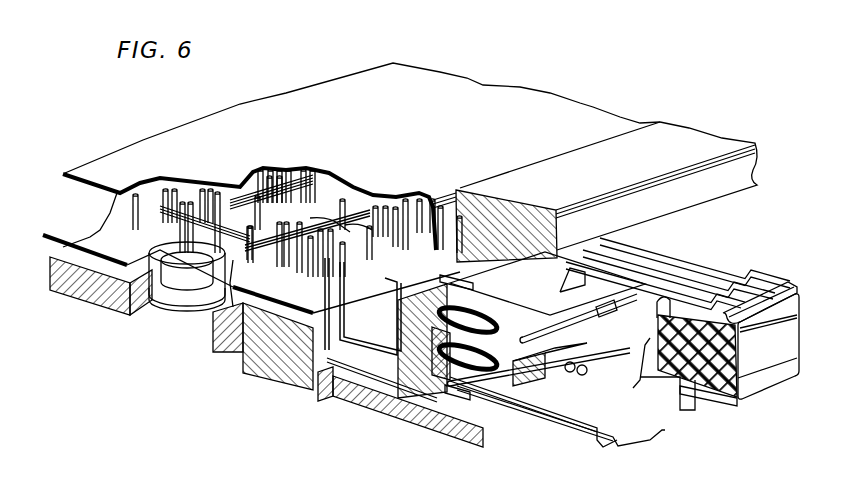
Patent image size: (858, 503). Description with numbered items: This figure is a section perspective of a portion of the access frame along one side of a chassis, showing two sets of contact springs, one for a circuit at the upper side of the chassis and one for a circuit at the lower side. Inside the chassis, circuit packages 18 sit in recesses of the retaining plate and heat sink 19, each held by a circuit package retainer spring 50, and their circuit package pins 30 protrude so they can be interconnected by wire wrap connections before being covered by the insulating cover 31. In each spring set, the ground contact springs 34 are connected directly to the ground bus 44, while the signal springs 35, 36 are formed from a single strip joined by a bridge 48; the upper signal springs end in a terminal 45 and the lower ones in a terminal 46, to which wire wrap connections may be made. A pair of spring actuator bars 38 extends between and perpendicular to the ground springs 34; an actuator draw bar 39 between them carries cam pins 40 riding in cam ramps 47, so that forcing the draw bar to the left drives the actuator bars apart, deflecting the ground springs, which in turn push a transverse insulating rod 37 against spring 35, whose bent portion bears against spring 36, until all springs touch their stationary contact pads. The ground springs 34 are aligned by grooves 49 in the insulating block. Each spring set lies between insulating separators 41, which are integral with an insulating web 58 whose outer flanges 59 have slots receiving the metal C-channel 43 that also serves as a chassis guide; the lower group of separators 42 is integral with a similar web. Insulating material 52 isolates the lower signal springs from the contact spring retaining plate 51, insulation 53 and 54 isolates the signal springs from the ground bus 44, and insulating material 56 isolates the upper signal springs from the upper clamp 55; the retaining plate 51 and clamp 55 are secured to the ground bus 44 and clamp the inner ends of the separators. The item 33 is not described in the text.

The circuit package 18 is at (180, 280).
The retaining plate and heat sink 19 is at (102, 300).
The circuit package pins 30 is at (270, 170).
The insulating cover 31 is at (350, 86).
The sheet 33 is at (110, 230).
The ground contact springs 34 is at (640, 336).
The signal spring 35 is at (620, 310).
The signal spring 36 is at (600, 305).
The transverse insulating rod 37 is at (610, 300).
The spring actuator bars 38 is at (583, 375).
The actuator draw bar 39 is at (535, 385).
The cam pins 40 is at (575, 362).
The separators 41 is at (755, 260).
The lower group of separators 42 is at (653, 395).
The C-channel 43 is at (790, 350).
The ground bus 44 is at (413, 392).
The terminal 45 is at (346, 282).
The terminal 46 is at (322, 292).
The cam ramps 47 is at (658, 312).
The bridge 48 is at (470, 286).
The grooves 49 is at (580, 292).
The circuit package retainer spring 50 is at (195, 296).
The contact spring retaining plate 51 is at (368, 402).
The insulating material 52 is at (330, 383).
The insulation 53 is at (312, 350).
The insulation 54 is at (410, 386).
The upper clamp 55 is at (697, 135).
The insulating material 56 is at (513, 252).
The insulating web 58 is at (686, 388).
The flanges 59 is at (790, 300).